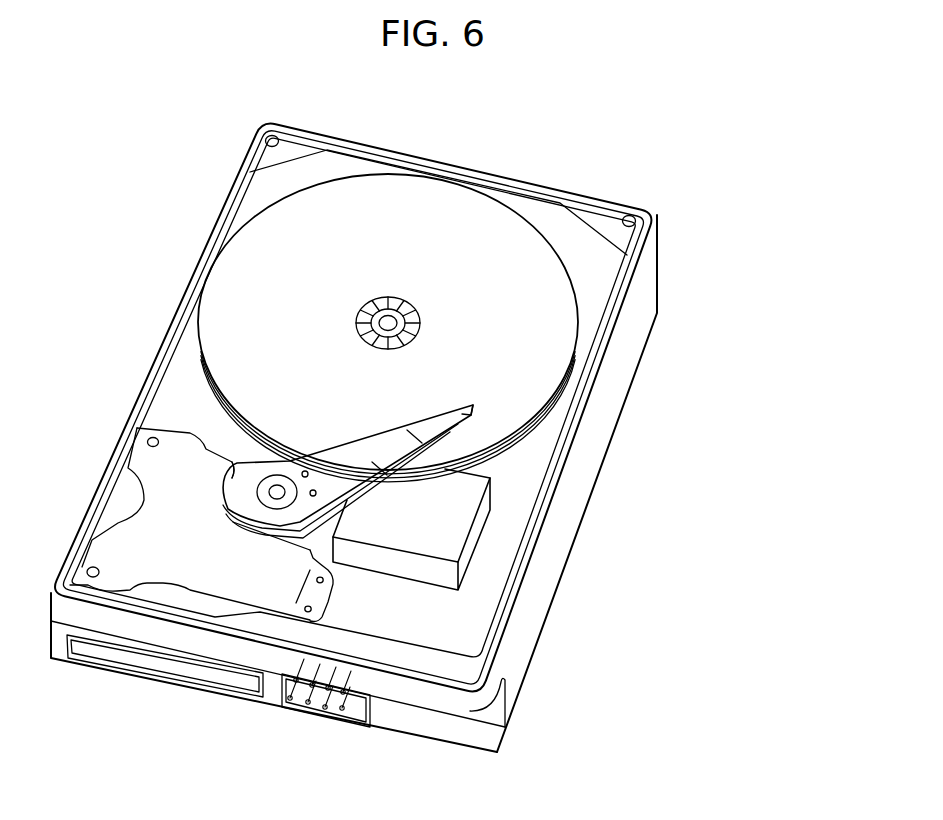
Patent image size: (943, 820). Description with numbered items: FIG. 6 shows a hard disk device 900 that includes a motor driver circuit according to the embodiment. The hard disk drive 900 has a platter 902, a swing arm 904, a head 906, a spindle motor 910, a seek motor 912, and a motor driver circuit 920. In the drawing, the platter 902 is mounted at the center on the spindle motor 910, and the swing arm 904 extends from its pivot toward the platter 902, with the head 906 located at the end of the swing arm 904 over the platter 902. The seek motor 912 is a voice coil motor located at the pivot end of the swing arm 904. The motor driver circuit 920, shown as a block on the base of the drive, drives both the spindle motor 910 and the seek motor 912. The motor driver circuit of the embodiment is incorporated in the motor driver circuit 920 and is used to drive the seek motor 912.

The hard disk device 900 is at (751, 137).
The platter 902 is at (450, 252).
The swing arm 904 is at (383, 477).
The head 906 is at (471, 407).
The spindle motor 910 is at (368, 300).
The seek motor 912 is at (233, 522).
The motor driver circuit 920 is at (443, 530).